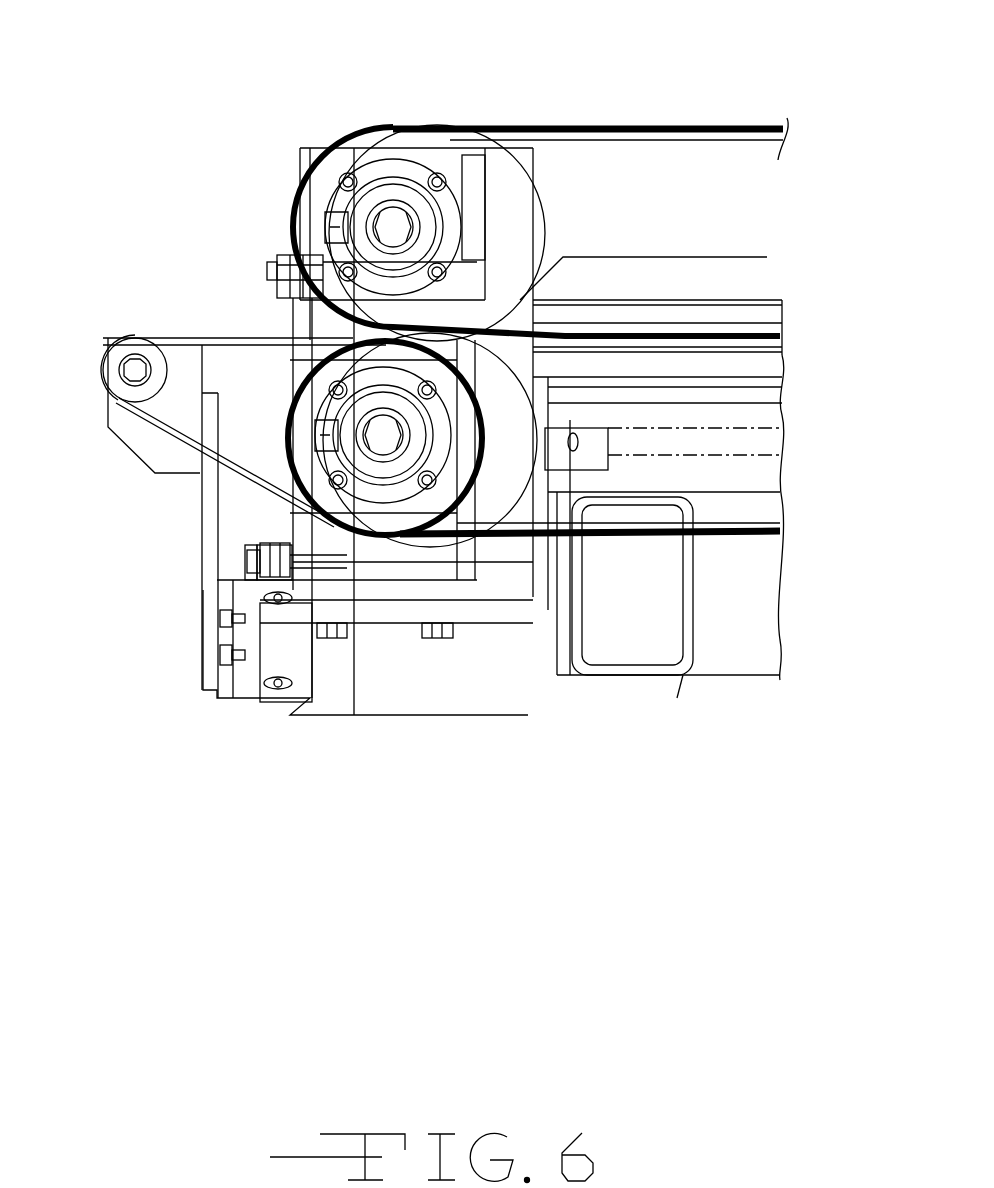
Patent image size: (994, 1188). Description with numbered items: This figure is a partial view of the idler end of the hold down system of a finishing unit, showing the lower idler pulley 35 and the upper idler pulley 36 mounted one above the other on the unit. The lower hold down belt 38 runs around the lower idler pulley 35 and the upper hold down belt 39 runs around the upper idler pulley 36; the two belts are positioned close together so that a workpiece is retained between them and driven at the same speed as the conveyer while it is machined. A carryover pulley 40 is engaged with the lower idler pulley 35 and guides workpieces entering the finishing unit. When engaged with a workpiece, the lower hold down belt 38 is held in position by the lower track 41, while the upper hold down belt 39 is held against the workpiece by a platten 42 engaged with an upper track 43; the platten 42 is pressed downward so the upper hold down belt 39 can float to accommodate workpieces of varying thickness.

The lower idler pulley 35 is at (293, 497).
The upper idler pulley 36 is at (308, 210).
The lower hold down belt 38 is at (528, 537).
The upper hold down belt 39 is at (573, 127).
The carryover pulley 40 is at (125, 352).
The lower track 41 is at (747, 365).
The platten 42 is at (612, 275).
The upper track 43 is at (750, 317).